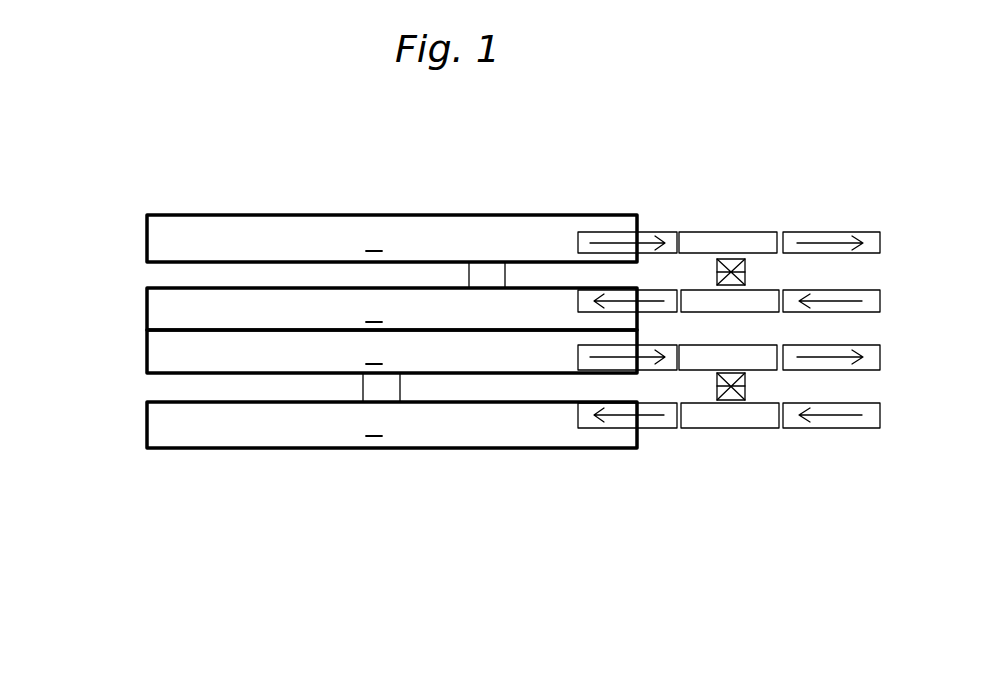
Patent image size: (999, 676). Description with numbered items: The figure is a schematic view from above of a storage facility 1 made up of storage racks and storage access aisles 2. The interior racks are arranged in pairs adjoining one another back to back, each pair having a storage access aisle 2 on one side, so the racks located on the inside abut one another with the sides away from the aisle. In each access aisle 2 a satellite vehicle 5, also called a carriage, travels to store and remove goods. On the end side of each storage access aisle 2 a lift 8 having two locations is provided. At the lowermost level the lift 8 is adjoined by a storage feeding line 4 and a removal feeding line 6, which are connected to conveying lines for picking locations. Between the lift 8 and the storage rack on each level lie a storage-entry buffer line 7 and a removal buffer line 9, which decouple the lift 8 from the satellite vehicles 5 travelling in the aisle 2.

The storage facility 1 is at (662, 148).
The storage access aisle 2 is at (142, 274).
The storage feeding line 4 is at (877, 298).
The satellite vehicle 5 is at (434, 332).
The removal feeding line 6 is at (877, 235).
The storage-entry buffer line 7 is at (667, 297).
The lift 8 is at (760, 272).
The removal buffer line 9 is at (663, 236).